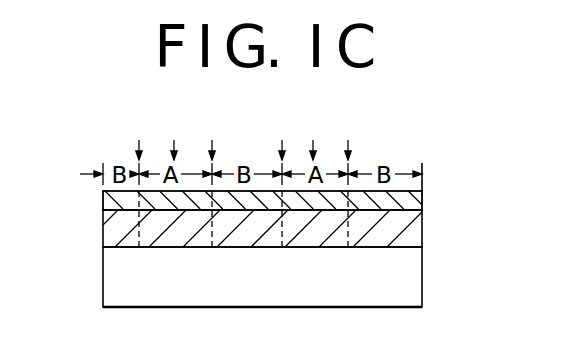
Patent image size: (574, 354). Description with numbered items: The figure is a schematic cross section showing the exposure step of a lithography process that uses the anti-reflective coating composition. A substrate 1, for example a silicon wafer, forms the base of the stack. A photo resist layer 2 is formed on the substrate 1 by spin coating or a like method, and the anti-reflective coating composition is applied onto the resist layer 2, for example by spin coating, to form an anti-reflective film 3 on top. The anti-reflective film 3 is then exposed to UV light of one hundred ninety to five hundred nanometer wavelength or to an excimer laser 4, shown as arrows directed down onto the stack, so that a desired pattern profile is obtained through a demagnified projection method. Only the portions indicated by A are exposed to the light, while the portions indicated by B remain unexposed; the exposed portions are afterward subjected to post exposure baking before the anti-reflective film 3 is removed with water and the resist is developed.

The substrate 1 is at (405, 273).
The photo resist layer 2 is at (413, 228).
The anti-reflective film 3 is at (409, 195).
The excimer laser 4 is at (312, 139).